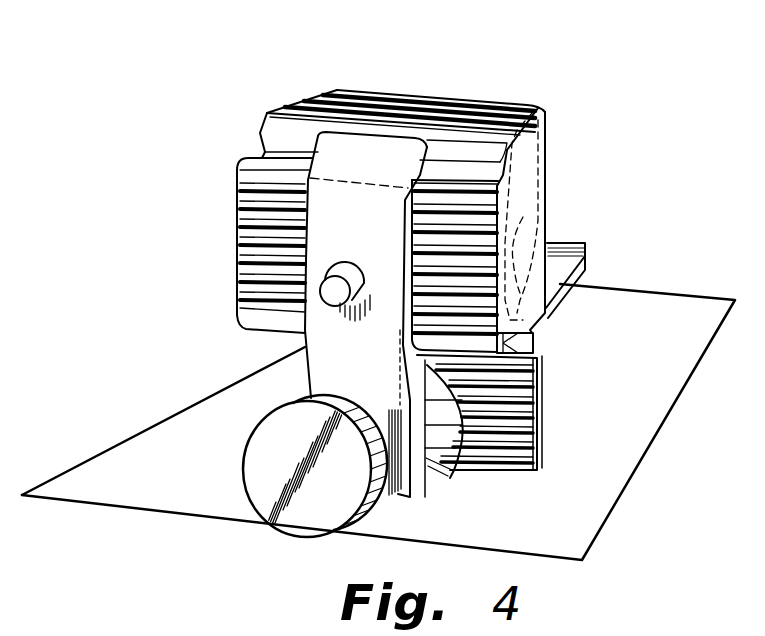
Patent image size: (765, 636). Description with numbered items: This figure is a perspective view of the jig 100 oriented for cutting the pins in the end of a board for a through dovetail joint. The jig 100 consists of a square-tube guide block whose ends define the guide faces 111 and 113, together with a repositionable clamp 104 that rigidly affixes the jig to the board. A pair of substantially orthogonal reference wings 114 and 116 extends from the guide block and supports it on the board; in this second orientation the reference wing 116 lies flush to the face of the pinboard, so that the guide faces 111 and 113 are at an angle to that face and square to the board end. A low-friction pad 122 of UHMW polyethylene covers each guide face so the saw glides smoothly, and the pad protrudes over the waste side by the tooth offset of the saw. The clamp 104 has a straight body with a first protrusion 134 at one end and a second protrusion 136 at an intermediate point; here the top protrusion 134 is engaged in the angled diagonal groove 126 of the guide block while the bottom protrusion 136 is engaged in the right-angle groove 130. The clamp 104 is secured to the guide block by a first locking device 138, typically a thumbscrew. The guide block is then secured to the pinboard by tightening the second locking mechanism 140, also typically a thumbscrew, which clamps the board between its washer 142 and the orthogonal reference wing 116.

The jig 100 is at (617, 78).
The repositionable clamp 104 is at (370, 228).
The guide face 111 is at (528, 198).
The guide face 113 is at (232, 235).
The reference wing 114 is at (533, 431).
The reference wing 116 is at (578, 257).
The low-friction pad 122 is at (533, 151).
The diagonal groove 126 is at (263, 152).
The groove 130 is at (508, 352).
The first protrusion 134 is at (431, 144).
The second protrusion 136 is at (512, 379).
The first locking device 138 is at (330, 290).
The second locking mechanism 140 is at (262, 471).
The washer 142 is at (440, 478).